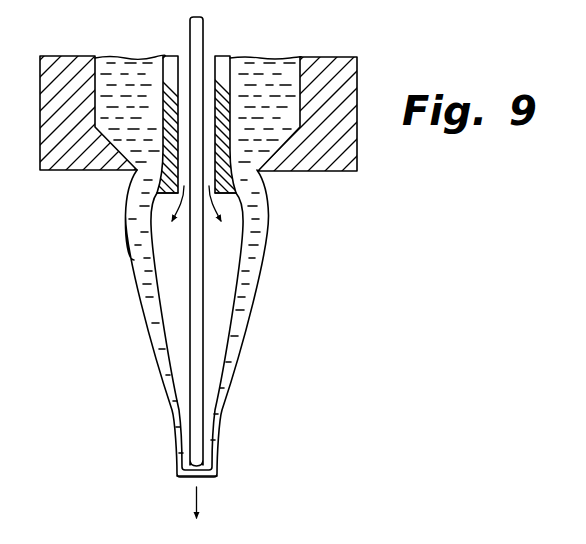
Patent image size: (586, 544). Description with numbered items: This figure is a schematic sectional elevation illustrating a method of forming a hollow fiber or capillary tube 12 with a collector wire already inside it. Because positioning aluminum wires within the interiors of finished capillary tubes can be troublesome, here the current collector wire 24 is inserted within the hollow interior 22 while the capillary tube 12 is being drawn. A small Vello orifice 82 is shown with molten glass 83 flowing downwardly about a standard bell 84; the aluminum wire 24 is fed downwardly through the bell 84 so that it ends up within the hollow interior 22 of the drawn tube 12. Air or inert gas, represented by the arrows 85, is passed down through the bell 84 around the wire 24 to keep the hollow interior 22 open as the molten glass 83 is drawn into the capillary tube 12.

The hollow fiber or capillary tube 12 is at (220, 450).
The hollow interior 22 is at (208, 412).
The current collector wire 24 is at (205, 33).
The Vello orifice 82 is at (268, 174).
The molten glass 83 is at (128, 70).
The bell 84 is at (241, 187).
The arrows 85 is at (186, 200).